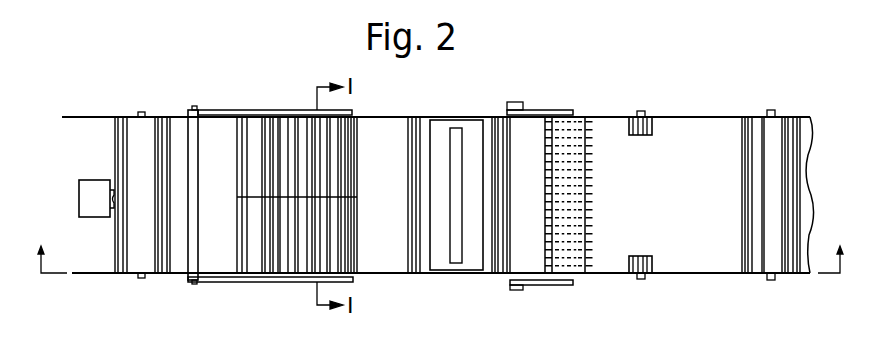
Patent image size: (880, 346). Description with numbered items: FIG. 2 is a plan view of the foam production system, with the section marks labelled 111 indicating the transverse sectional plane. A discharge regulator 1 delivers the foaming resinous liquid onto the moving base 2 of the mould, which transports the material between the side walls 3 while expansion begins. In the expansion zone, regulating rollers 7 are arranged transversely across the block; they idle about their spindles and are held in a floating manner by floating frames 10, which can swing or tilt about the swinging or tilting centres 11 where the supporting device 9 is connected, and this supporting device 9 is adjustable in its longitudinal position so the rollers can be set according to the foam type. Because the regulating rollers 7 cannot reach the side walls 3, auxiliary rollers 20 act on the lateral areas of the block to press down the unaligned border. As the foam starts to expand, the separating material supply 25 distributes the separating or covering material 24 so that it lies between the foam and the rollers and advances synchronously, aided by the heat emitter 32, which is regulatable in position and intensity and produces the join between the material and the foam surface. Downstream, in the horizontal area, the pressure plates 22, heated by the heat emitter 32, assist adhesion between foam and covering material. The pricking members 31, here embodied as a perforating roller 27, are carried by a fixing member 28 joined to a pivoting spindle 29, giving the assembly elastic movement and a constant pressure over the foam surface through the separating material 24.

The discharge regulator 1 is at (94, 192).
The moving base 2 is at (95, 140).
The side walls 3 is at (620, 275).
The regulating rollers 7 is at (283, 253).
The supporting device 9 is at (193, 243).
The floating frames 10 is at (227, 110).
The swinging or tilting centres 11 is at (193, 106).
The auxiliary rollers 20 is at (645, 122).
The pressure plates 22 is at (512, 253).
The separating or covering material 24 is at (617, 137).
The separating material supply 25 is at (140, 252).
The perforating roller 27 is at (568, 252).
The fixing member 28 is at (543, 110).
The pivoting spindle 29 is at (517, 103).
The pricking members 31 is at (588, 150).
The heat emitter 32 is at (455, 253).
The section line III 111 is at (443, 245).